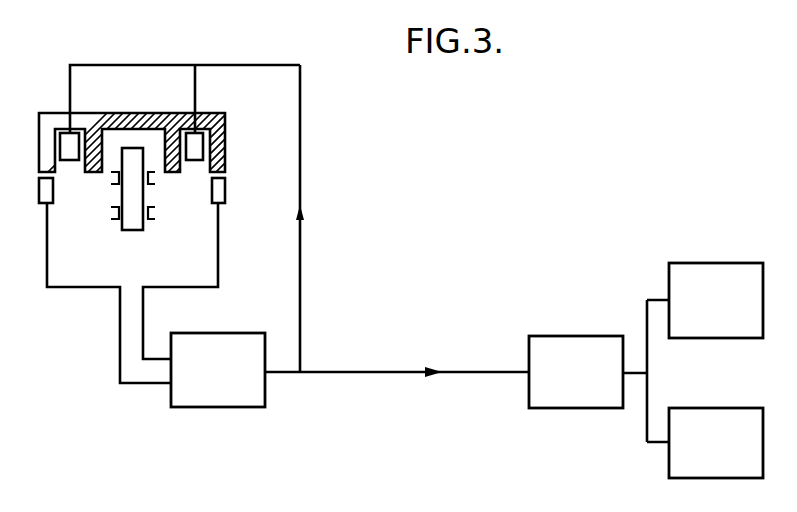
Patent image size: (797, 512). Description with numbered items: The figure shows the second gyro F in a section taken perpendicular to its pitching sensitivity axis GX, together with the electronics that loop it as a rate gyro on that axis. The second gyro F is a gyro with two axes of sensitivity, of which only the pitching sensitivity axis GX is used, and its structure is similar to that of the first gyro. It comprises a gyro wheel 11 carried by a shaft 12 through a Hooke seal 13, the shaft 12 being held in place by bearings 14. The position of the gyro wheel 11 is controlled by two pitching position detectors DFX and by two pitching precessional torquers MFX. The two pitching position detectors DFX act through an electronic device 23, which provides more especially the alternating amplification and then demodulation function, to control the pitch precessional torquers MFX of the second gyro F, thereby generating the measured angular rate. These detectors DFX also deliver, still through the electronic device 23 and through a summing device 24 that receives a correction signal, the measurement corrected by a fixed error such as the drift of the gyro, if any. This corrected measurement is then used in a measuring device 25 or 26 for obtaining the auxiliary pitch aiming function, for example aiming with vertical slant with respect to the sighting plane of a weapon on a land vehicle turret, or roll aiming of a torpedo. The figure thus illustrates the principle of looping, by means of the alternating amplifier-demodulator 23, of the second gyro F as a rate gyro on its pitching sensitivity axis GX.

The gyro wheel 11 is at (157, 122).
The shaft 12 is at (133, 222).
The Hooke seal 13 is at (135, 140).
The bearings 14 is at (117, 218).
The electronic device 23 is at (215, 395).
The summing device 24 is at (574, 348).
The measuring device 25 is at (708, 277).
The measuring device 26 is at (720, 425).
The second gyro F is at (99, 106).
The pitching precessional torquers MFX is at (233, 134).
The pitching position detectors DFX is at (237, 207).
The pitching sensitivity axis GX is at (122, 150).